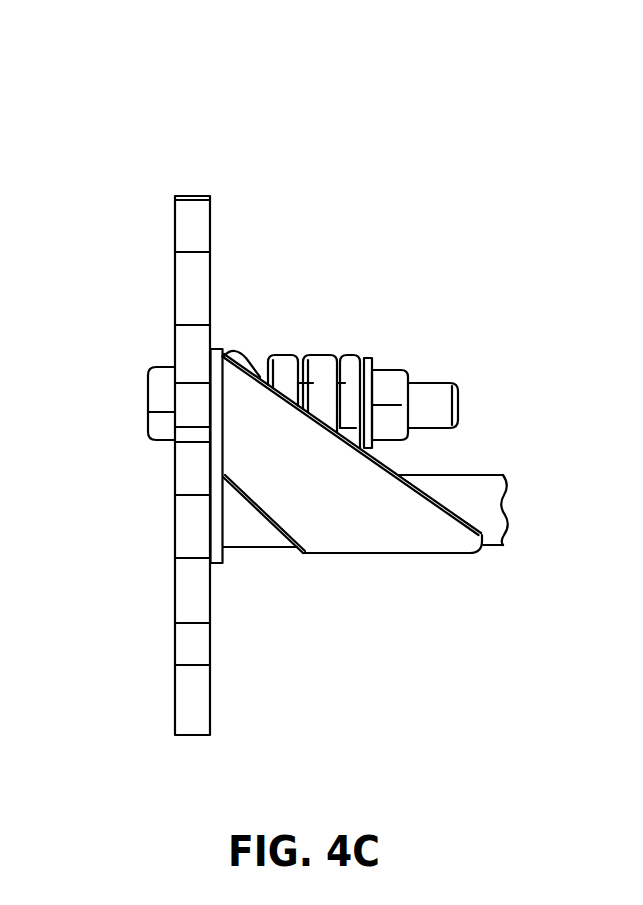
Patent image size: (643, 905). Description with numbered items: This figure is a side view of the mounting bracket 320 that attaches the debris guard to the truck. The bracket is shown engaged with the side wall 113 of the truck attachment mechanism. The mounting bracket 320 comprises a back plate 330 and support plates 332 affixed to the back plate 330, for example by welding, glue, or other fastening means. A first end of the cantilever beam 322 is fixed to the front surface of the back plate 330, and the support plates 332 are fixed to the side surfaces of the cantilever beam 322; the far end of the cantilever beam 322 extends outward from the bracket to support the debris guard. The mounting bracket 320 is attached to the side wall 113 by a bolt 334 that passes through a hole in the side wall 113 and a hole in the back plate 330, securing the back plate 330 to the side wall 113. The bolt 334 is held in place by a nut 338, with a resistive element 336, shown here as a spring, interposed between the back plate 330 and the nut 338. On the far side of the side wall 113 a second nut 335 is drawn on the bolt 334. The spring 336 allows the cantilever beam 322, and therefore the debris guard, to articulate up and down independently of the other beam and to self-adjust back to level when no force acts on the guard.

The mounting bracket 320 is at (537, 102).
The side wall 113 is at (188, 457).
The nut 335 is at (162, 389).
The back plate 330 is at (225, 562).
The support plate 332 is at (380, 530).
The resistive element 336 is at (288, 362).
The nut 338 is at (388, 380).
The bolt 334 is at (437, 397).
The cantilever beam 322 is at (482, 498).